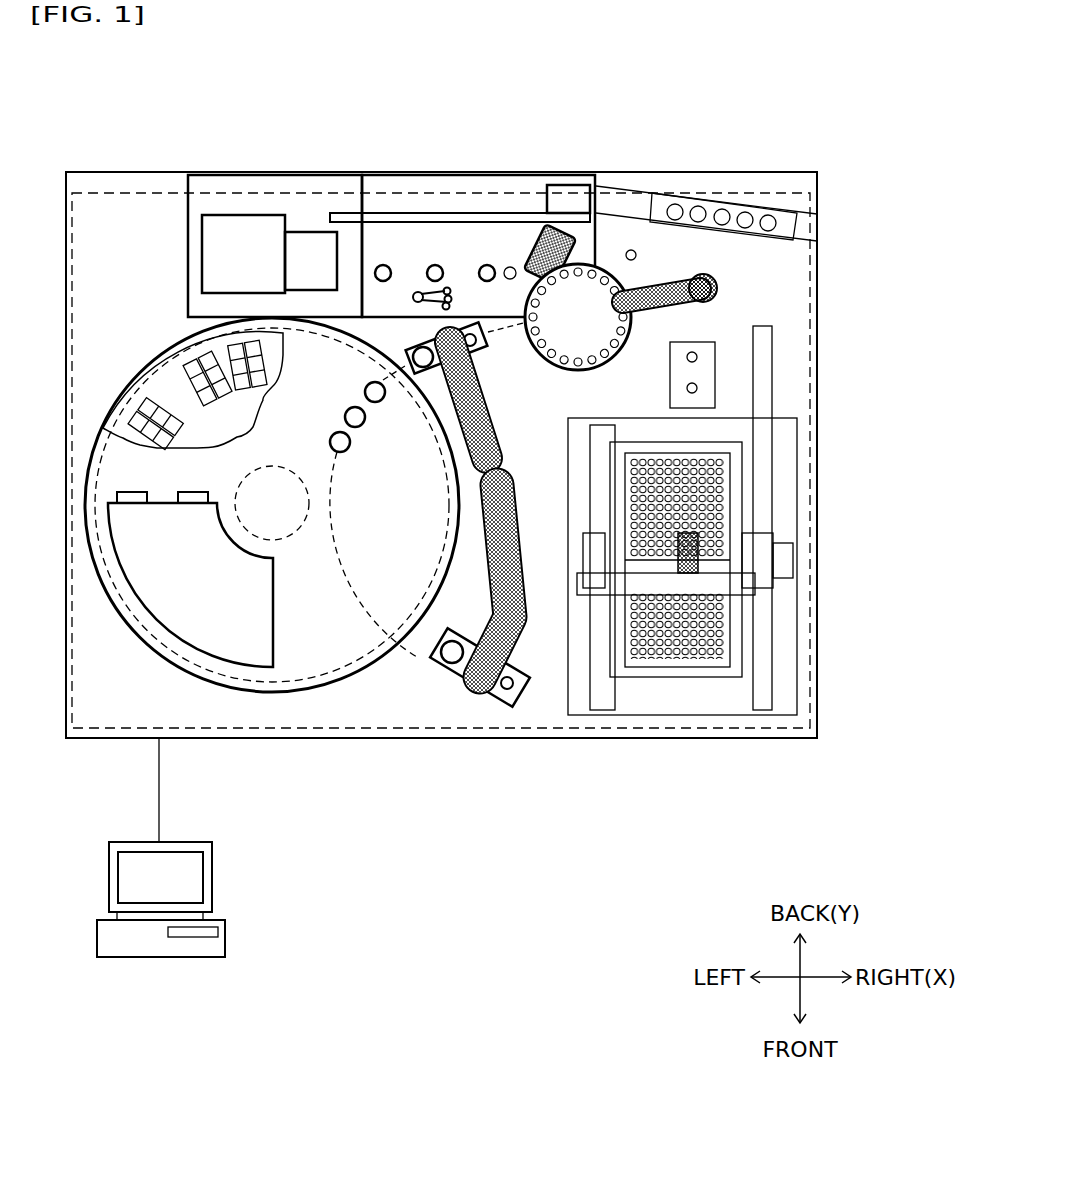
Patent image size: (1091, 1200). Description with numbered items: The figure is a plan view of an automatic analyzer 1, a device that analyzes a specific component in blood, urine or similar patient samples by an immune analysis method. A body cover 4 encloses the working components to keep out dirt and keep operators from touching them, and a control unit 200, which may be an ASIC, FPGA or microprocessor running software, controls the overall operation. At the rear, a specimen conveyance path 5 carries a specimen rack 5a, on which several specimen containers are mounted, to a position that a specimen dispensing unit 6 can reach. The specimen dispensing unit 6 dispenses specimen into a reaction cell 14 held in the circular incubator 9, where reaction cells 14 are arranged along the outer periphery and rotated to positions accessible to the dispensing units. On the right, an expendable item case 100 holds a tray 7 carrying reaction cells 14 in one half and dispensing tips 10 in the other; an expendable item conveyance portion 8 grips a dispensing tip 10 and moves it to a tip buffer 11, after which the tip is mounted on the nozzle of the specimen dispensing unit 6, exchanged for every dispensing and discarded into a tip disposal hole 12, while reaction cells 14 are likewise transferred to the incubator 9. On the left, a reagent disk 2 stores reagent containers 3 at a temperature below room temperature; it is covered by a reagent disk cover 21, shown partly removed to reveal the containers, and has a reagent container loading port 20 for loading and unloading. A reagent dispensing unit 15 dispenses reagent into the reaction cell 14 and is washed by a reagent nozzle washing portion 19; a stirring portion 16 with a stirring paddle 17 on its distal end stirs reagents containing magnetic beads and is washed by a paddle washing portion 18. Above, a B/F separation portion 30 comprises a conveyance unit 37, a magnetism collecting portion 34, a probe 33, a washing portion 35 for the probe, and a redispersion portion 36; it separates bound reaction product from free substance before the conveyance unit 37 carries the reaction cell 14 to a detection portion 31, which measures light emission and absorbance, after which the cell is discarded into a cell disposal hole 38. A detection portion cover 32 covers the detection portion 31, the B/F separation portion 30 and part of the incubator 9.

The automatic analyzer 1 is at (826, 67).
The reagent disk 2 is at (168, 647).
The reagent container 3 is at (168, 378).
The body cover 4 is at (668, 718).
The specimen conveyance path 5 is at (795, 210).
The specimen rack 5a is at (702, 195).
The specimen dispensing unit 6 is at (708, 275).
The tray 7 is at (742, 493).
The expendable item conveyance portion 8 is at (698, 570).
The incubator 9 is at (601, 264).
The dispensing tip 10 is at (697, 447).
The tip buffer 11 is at (692, 352).
The tip disposal hole 12 is at (632, 250).
The reaction cell 14 is at (608, 258).
The reagent dispensing unit 15 is at (500, 462).
The stirring portion 16 is at (518, 617).
The stirring paddle 17 is at (475, 688).
The paddle washing portion 18 is at (487, 700).
The reagent nozzle washing portion 19 is at (490, 347).
The reagent container loading port 20 is at (245, 643).
The reagent disk cover 21 is at (130, 627).
The B/F separation portion 30 is at (473, 250).
The detection portion 31 is at (298, 232).
The detection portion cover 32 is at (205, 175).
The probe 33 is at (452, 288).
The magnetism collecting portion 34 is at (385, 265).
The washing portion 35 is at (437, 265).
The redispersion portion 36 is at (490, 265).
The conveyance unit 37 is at (565, 222).
The cell disposal hole 38 is at (512, 267).
The expendable item case 100 is at (722, 738).
The control unit 200 is at (160, 948).